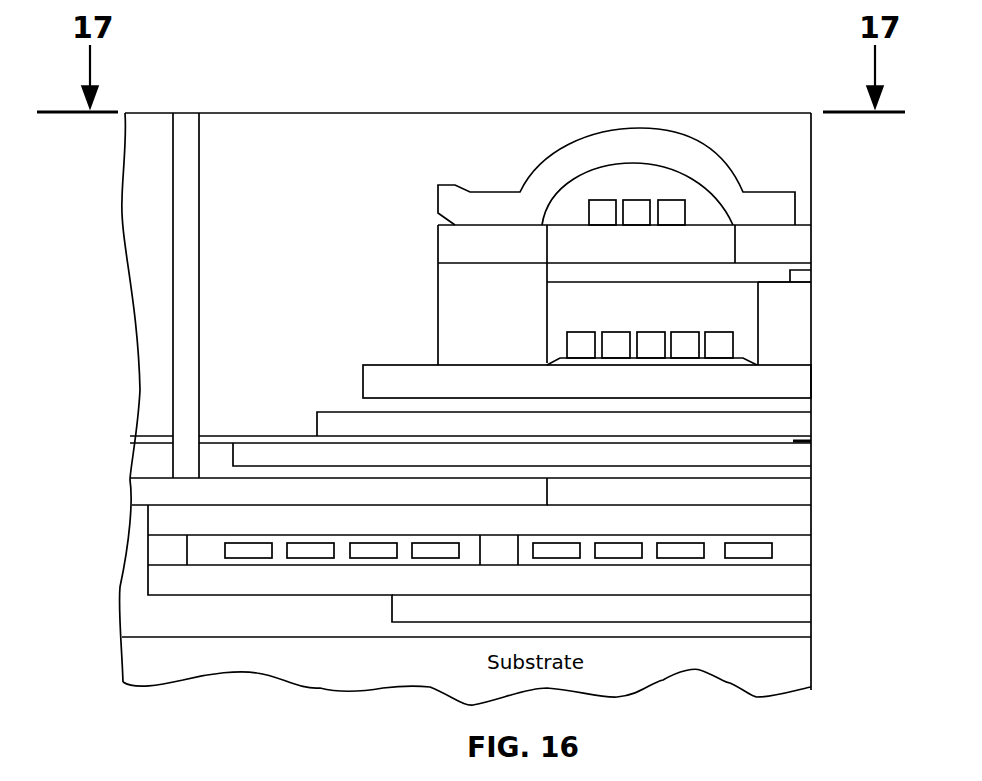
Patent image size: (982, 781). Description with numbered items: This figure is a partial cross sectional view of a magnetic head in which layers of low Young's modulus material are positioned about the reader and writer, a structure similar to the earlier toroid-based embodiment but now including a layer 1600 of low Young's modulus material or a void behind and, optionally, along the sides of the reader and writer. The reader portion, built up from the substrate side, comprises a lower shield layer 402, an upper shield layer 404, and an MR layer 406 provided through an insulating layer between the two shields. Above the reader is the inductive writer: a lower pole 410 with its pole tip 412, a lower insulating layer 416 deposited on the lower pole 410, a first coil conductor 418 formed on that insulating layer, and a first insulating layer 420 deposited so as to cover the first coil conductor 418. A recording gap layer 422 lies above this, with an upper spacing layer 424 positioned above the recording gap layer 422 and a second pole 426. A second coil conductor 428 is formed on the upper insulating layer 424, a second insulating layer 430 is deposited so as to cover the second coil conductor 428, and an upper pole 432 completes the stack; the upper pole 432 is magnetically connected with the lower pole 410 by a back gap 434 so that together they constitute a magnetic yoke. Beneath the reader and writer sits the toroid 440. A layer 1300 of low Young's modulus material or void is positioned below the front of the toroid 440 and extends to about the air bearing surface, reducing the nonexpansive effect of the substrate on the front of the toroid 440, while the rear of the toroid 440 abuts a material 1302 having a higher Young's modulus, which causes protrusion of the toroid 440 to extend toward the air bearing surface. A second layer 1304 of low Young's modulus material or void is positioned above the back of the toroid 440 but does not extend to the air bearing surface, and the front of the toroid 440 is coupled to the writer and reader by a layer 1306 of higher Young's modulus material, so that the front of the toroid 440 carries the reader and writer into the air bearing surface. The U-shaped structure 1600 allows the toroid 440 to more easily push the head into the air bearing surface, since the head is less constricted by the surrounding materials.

The layer of low Young's modulus material or void 1600 is at (173, 175).
The upper spacing layer 424 is at (570, 235).
The second coil conductor 428 is at (643, 200).
The second insulating layer 430 is at (673, 187).
The upper pole 432 is at (770, 192).
The second pole 426 is at (813, 237).
The recording gap layer 422 is at (775, 270).
The first insulating layer 420 is at (747, 302).
The first coil conductor 418 is at (730, 332).
The P1 pole tip 412 is at (813, 328).
The lower insulating layer 416 is at (757, 362).
The lower pole 410 is at (813, 385).
The upper shield layer 404 is at (813, 420).
The MR layer 406 is at (813, 443).
The lower shield layer 402 is at (813, 460).
The layer of higher Young's modulus material 1306 is at (813, 487).
The material having a higher Young's modulus 1302 is at (130, 490).
The second layer of low Young's modulus material 1304 is at (125, 563).
The toroid 440 is at (813, 507).
The layer of low Young's modulus material 1300 is at (813, 615).
The back gap 434 is at (416, 274).